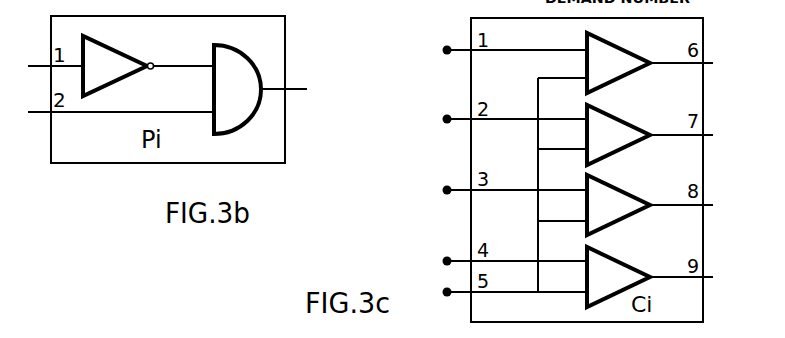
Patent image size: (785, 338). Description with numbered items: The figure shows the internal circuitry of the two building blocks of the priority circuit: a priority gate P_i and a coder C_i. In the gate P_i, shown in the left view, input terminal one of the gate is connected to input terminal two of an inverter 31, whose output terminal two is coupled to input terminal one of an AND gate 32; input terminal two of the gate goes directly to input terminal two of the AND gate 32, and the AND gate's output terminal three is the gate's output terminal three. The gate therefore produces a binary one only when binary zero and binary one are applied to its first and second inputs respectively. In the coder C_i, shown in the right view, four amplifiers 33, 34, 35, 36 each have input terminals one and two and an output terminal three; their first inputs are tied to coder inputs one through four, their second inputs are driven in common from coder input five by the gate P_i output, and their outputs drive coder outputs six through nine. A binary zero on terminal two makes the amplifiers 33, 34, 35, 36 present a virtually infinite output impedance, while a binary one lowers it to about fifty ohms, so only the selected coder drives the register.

In FIG. 3b, the inverter 31 is at (107, 43).
In FIG. 3b, the AND gate 32 is at (240, 43).
In FIG. 3c, the amplifier 33 is at (626, 43).
In FIG. 3c, the amplifier 34 is at (626, 115).
In FIG. 3c, the amplifier 35 is at (626, 188).
In FIG. 3c, the amplifier 36 is at (626, 257).